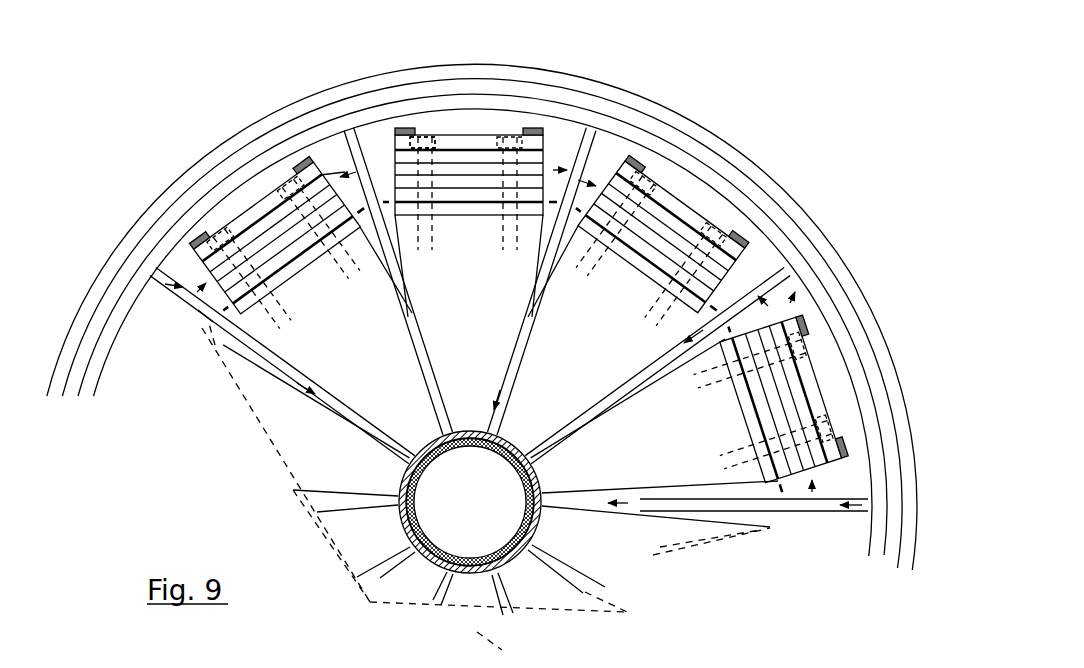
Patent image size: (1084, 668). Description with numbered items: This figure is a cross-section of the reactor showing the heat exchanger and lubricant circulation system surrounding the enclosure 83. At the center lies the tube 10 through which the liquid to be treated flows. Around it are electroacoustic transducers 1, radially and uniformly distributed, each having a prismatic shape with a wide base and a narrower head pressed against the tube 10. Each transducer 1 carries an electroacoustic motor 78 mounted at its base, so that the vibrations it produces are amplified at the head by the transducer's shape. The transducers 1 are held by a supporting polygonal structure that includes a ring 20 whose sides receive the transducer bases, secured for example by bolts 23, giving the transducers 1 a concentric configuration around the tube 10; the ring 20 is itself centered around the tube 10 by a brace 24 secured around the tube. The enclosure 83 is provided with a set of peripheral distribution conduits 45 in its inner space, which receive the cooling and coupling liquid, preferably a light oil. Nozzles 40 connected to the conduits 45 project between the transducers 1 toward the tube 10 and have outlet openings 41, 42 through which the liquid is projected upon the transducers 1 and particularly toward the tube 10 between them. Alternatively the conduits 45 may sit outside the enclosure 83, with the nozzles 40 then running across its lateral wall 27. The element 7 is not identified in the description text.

The electroacoustic transducer 1 is at (291, 433).
The module 7 is at (470, 133).
The tube 10 is at (509, 530).
The ring 20 is at (785, 528).
The bolt 23 is at (498, 138).
The brace 24 is at (542, 483).
The lateral wall 27 is at (720, 125).
The nozzle 40 is at (848, 513).
The outlet opening 41 is at (372, 168).
The outlet opening 42 is at (410, 320).
The peripheral distribution conduit 45 is at (275, 152).
The electroacoustic motor 78 is at (226, 212).
The enclosure 83 is at (824, 212).